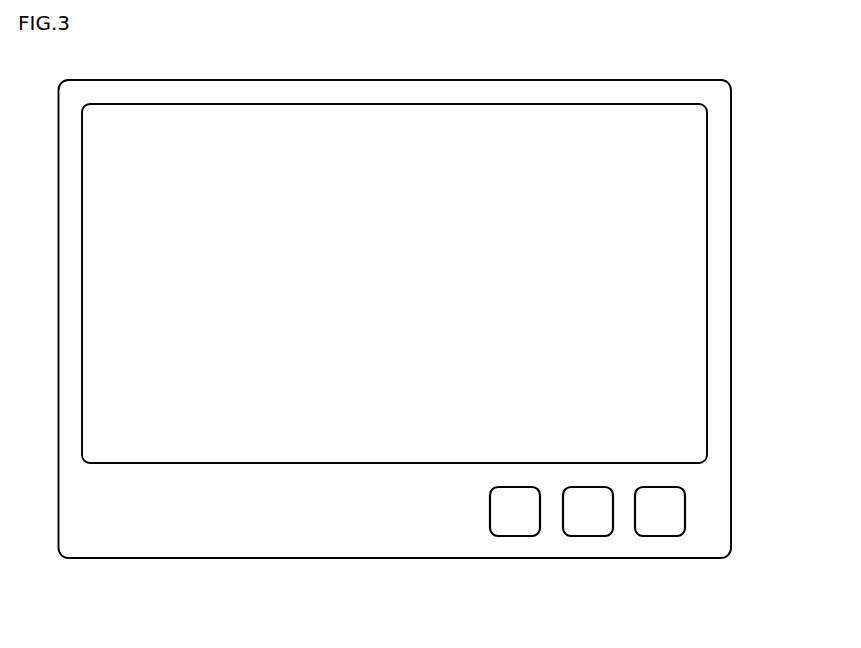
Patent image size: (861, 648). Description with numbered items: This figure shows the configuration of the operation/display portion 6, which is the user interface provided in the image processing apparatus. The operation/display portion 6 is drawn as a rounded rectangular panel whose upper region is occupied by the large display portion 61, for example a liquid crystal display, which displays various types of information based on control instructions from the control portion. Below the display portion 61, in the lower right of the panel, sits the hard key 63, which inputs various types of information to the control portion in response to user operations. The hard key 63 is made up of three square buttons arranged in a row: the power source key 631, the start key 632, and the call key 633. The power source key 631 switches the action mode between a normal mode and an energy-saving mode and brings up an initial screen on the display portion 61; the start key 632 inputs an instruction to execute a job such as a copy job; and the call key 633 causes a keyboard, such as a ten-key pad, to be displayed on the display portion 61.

The operation/display portion 6 is at (743, 69).
The display portion 61 is at (707, 212).
The hard key 63 is at (697, 483).
The power source key 631 is at (660, 536).
The start key 632 is at (588, 536).
The call key 633 is at (515, 536).